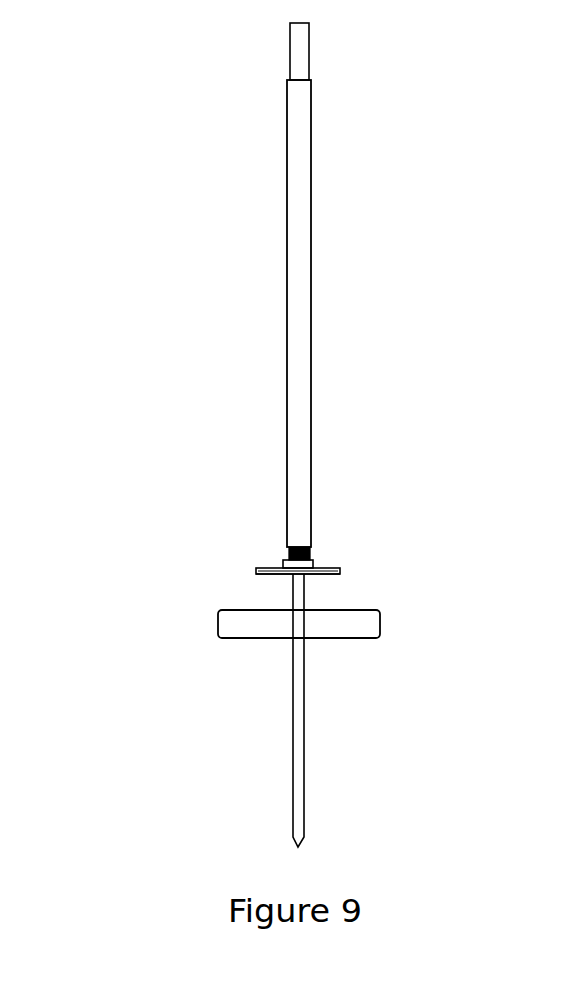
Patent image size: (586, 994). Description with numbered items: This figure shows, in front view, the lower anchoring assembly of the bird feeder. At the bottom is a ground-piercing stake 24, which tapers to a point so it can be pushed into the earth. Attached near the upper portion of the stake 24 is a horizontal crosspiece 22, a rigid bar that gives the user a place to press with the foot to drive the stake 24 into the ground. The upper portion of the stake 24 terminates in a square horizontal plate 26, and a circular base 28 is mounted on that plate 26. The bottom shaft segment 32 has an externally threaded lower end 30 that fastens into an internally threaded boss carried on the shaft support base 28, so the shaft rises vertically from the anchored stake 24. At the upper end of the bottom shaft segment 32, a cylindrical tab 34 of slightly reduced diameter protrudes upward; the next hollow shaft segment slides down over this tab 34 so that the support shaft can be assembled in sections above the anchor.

The horizontal crosspiece 22 is at (355, 628).
The ground-piercing stake 24 is at (293, 789).
The square horizontal plate 26 is at (262, 577).
The circular base 28 is at (268, 561).
The externally threaded lower end 30 is at (318, 548).
The bottom shaft segment 32 is at (297, 280).
The cylindrical tab 34 is at (290, 56).